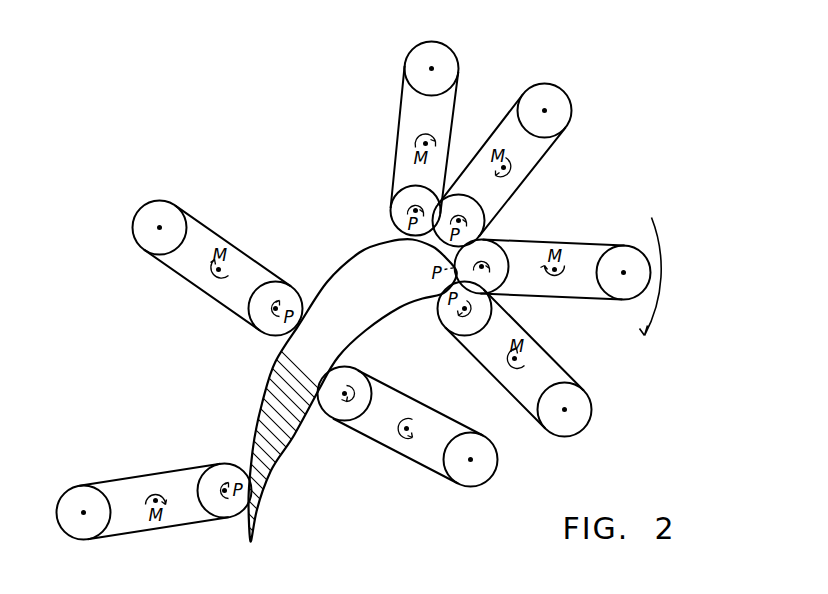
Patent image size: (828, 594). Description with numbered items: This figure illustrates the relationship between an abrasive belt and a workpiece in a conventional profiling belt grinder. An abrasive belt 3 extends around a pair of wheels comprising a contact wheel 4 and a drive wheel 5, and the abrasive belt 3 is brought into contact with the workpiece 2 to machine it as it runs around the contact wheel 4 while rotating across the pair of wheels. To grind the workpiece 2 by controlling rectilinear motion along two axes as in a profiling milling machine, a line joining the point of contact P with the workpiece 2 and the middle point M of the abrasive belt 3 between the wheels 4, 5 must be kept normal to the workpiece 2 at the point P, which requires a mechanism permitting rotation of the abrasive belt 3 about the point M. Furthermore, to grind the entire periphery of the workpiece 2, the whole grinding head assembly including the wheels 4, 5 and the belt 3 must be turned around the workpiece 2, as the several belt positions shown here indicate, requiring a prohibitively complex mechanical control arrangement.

The workpiece 2 is at (377, 323).
The abrasive belt 3 is at (369, 438).
The contact wheel 4 is at (332, 410).
The drive wheel 5 is at (455, 470).